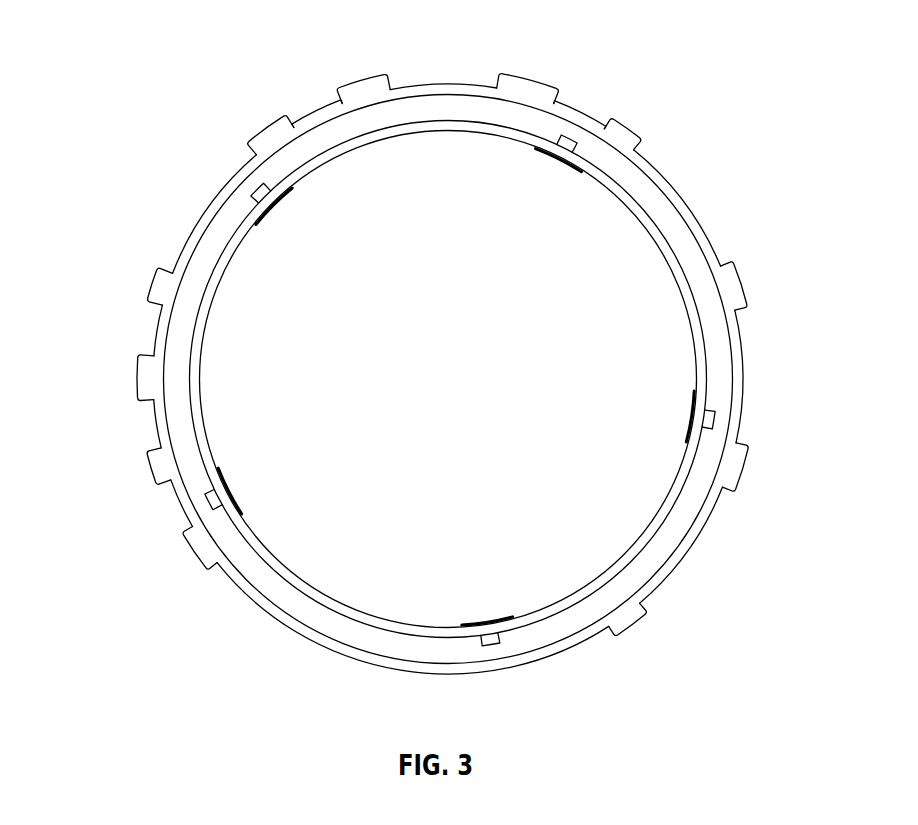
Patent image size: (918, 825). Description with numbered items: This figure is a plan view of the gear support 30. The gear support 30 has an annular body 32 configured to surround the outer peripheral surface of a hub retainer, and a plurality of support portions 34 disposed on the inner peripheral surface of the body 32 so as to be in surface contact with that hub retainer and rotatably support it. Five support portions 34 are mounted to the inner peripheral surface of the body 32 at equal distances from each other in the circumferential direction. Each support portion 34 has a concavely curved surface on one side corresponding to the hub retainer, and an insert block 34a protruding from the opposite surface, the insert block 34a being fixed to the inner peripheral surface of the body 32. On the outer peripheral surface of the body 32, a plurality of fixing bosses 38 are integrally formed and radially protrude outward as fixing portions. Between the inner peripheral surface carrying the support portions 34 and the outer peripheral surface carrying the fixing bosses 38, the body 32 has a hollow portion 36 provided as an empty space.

The gear support 30 is at (188, 150).
The body 32 is at (450, 82).
The support portion 34 is at (283, 193).
The insert block 34a is at (257, 186).
The hollow portion 36 is at (527, 117).
The fixing boss 38 is at (264, 137).